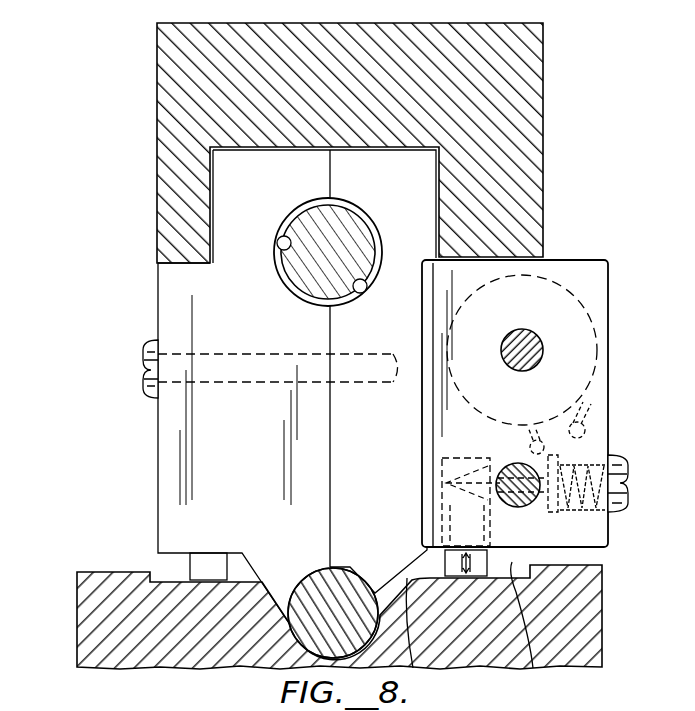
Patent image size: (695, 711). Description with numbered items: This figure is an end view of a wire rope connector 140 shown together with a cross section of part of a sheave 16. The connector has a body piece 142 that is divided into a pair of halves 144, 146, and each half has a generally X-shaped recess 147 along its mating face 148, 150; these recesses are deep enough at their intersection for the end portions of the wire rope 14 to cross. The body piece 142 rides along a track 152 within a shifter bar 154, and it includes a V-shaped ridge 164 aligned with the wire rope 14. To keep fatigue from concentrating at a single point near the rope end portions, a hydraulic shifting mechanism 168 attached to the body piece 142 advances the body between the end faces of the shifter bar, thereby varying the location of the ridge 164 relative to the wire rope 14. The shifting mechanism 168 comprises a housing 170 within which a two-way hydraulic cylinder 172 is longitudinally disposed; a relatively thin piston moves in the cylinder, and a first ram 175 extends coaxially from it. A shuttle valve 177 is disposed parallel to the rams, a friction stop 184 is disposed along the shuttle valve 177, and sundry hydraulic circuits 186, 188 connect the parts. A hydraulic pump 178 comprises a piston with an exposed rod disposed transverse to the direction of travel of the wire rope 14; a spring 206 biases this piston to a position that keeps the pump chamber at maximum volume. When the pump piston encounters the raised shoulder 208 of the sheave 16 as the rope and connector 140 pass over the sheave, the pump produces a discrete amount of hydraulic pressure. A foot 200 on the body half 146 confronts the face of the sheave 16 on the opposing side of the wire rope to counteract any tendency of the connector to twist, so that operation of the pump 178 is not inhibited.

The wire rope connector 140 is at (88, 172).
The shifter bar 154 is at (546, 52).
The track 152 is at (438, 163).
The wire rope 14 is at (366, 224).
The X-shaped recesses 147 is at (283, 246).
The housing 170 is at (600, 284).
The first ram 175 is at (527, 337).
The hydraulic shifting mechanism 168 is at (608, 322).
The two-way hydraulic cylinder 172 is at (596, 355).
The hydraulic circuit 188 is at (598, 421).
The hydraulic circuit 186 is at (547, 448).
The friction stop 184 is at (630, 482).
The shuttle valve 177 is at (528, 505).
The spring 206 is at (458, 458).
The hydraulic pump 178 is at (490, 557).
The mating face 148 is at (330, 336).
The mating face 150 is at (326, 404).
The body piece 142 is at (158, 398).
The body half 146 is at (249, 486).
The body half 144 is at (399, 486).
The foot 200 is at (190, 566).
The sheave 16 is at (604, 598).
The V-shaped ridge 164 is at (413, 668).
The raised shoulder 208 is at (533, 668).